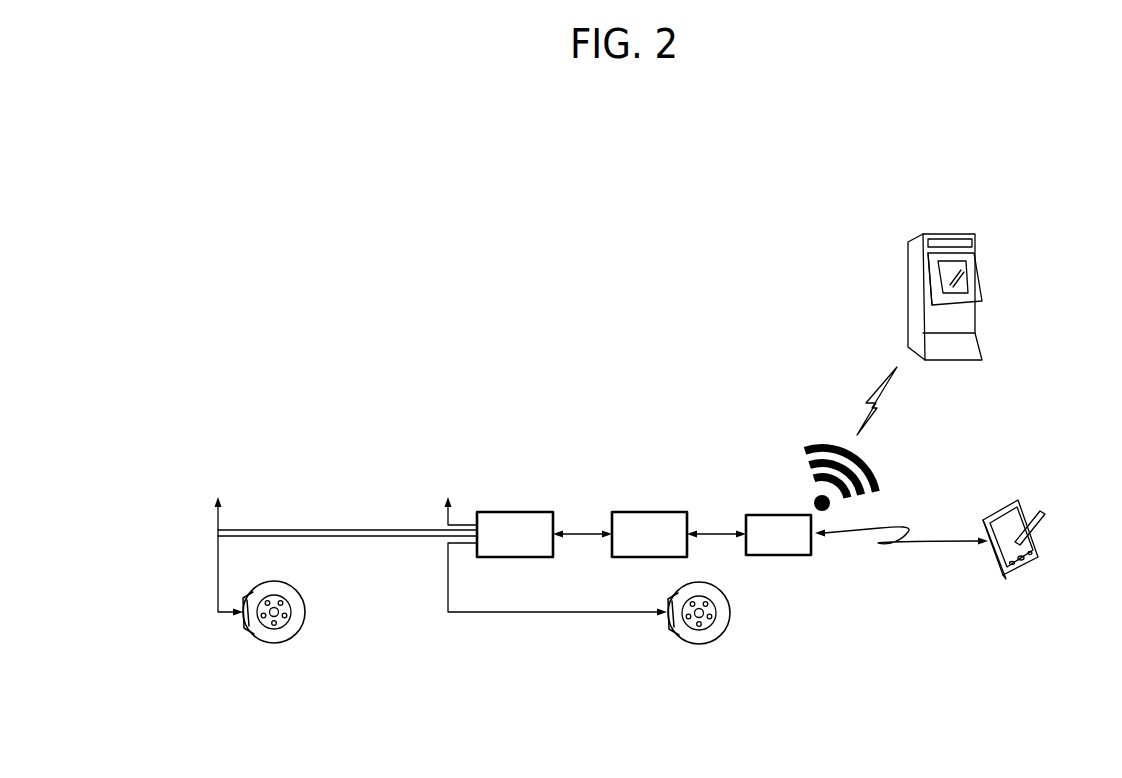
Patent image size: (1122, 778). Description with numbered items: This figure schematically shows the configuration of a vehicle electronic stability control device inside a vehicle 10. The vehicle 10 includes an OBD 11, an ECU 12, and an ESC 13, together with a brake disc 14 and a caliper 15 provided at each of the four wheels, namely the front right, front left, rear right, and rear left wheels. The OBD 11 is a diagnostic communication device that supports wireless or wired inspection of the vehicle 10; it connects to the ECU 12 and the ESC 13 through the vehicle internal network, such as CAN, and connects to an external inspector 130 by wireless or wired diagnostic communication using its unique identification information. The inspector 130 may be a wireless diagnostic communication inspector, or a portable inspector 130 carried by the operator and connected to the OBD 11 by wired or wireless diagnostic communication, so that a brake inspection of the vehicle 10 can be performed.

The vehicle 10 is at (365, 406).
The OBD 11 is at (770, 515).
The ECU 12 is at (652, 512).
The ESC 13 is at (515, 512).
The brake disc 14 is at (288, 638).
The caliper 15 is at (247, 626).
The inspector 130 is at (958, 233).